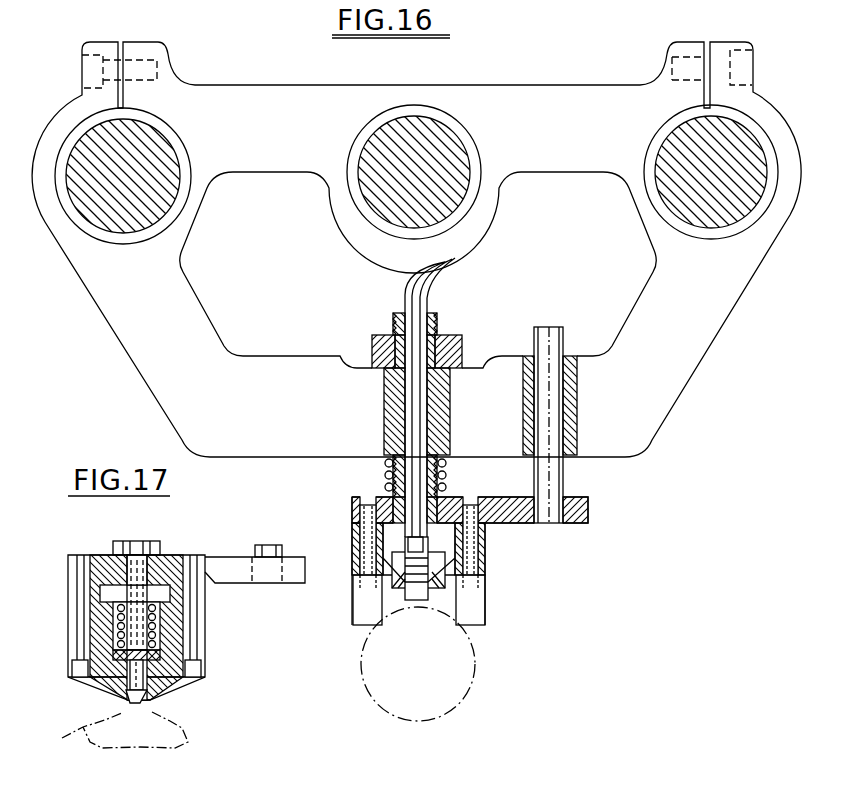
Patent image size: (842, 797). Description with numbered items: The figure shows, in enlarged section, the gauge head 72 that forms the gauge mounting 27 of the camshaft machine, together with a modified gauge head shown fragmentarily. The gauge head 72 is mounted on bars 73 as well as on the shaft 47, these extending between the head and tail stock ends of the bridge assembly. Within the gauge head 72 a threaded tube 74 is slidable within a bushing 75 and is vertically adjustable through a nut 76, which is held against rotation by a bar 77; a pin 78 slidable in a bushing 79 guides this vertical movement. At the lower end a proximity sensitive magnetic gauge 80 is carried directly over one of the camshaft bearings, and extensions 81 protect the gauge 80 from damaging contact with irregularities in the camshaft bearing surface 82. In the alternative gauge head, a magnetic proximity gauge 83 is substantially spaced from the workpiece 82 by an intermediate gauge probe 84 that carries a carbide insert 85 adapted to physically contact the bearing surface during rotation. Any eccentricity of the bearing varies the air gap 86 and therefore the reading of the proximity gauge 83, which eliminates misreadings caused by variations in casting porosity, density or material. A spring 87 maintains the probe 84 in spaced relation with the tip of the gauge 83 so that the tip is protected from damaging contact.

In FIG. 16, the gauge mounting 27 is at (346, 490).
In FIG. 16, the shaft 47 is at (412, 130).
In FIG. 16, the gauge head 72 is at (670, 380).
In FIG. 16, the bars 73 is at (95, 138).
In FIG. 16, the threaded tube 74 is at (428, 318).
In FIG. 16, the bushing 75 is at (386, 406).
In FIG. 16, the nut 76 is at (452, 342).
In FIG. 16, the bar 77 is at (512, 502).
In FIG. 16, the pin 78 is at (546, 332).
In FIG. 16, the bushing 79 is at (578, 368).
In FIG. 16, the proximity sensitive magnetic gauge 80 is at (430, 598).
In FIG. 16, the extensions 81 is at (472, 612).
In FIG. 16, the camshaft bearing surface 82 is at (495, 665).
In FIG. 17, the camshaft bearing surface 82 is at (85, 730).
In FIG. 17, the magnetic proximity gauge 83 is at (130, 628).
In FIG. 17, the gauge probe 84 is at (142, 688).
In FIG. 17, the carbide insert 85 is at (140, 706).
In FIG. 17, the air gap 86 is at (133, 647).
In FIG. 17, the spring 87 is at (150, 618).